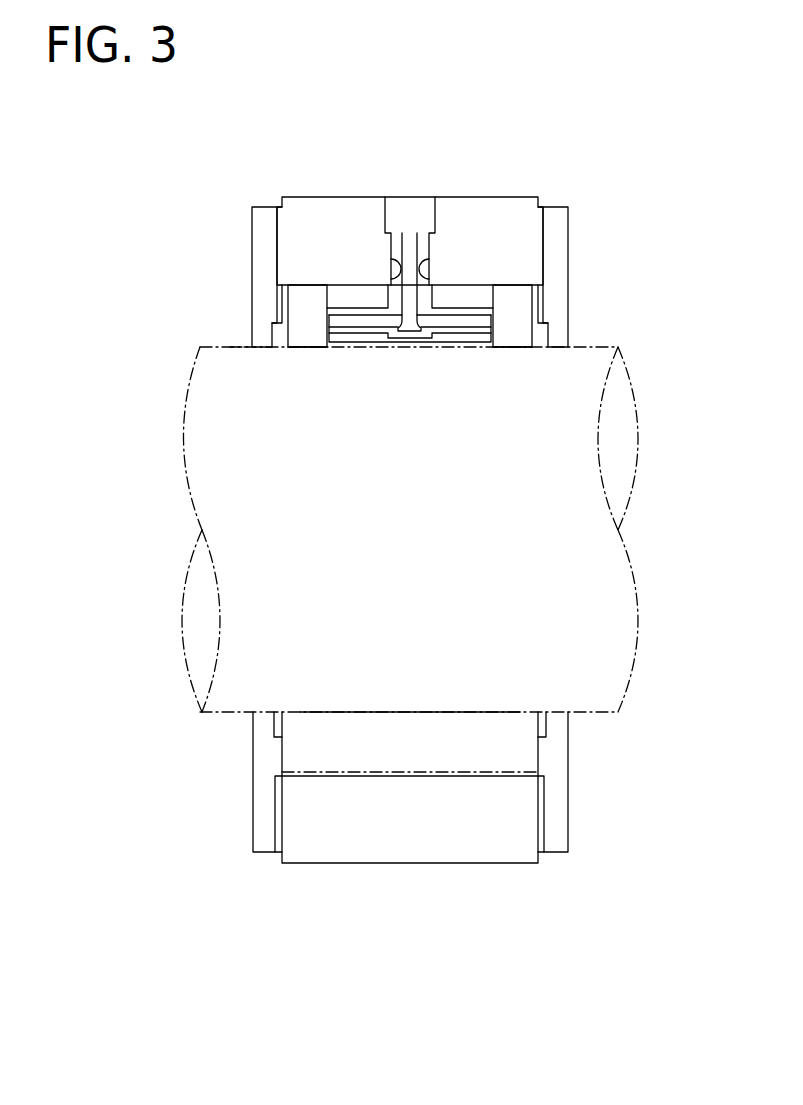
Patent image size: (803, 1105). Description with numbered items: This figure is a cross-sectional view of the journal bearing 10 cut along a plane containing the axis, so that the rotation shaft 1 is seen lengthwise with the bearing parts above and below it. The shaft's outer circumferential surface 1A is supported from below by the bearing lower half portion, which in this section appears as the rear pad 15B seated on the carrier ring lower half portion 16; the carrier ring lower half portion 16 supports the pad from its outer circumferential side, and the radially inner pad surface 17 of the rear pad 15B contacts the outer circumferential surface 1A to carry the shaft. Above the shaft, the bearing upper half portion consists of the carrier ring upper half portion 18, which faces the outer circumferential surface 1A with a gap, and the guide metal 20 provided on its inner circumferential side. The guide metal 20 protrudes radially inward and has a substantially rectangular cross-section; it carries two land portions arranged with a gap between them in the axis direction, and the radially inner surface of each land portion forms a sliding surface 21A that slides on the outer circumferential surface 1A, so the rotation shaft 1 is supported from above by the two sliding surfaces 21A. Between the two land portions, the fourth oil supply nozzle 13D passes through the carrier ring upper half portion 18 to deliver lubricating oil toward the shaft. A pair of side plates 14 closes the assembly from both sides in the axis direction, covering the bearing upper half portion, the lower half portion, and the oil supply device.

The rotation shaft 1 is at (193, 437).
The outer circumferential surface 1A is at (227, 347).
The journal bearing 10 is at (202, 162).
The fourth oil supply nozzle 13D is at (422, 338).
The side plates 14 is at (260, 278).
The rear pad 15B is at (410, 723).
The carrier ring lower half portion 16 is at (412, 853).
The pad surface 17 is at (462, 712).
The carrier ring upper half portion 18 is at (357, 207).
The guide metal 20 is at (319, 347).
The sliding surface 21A is at (302, 347).